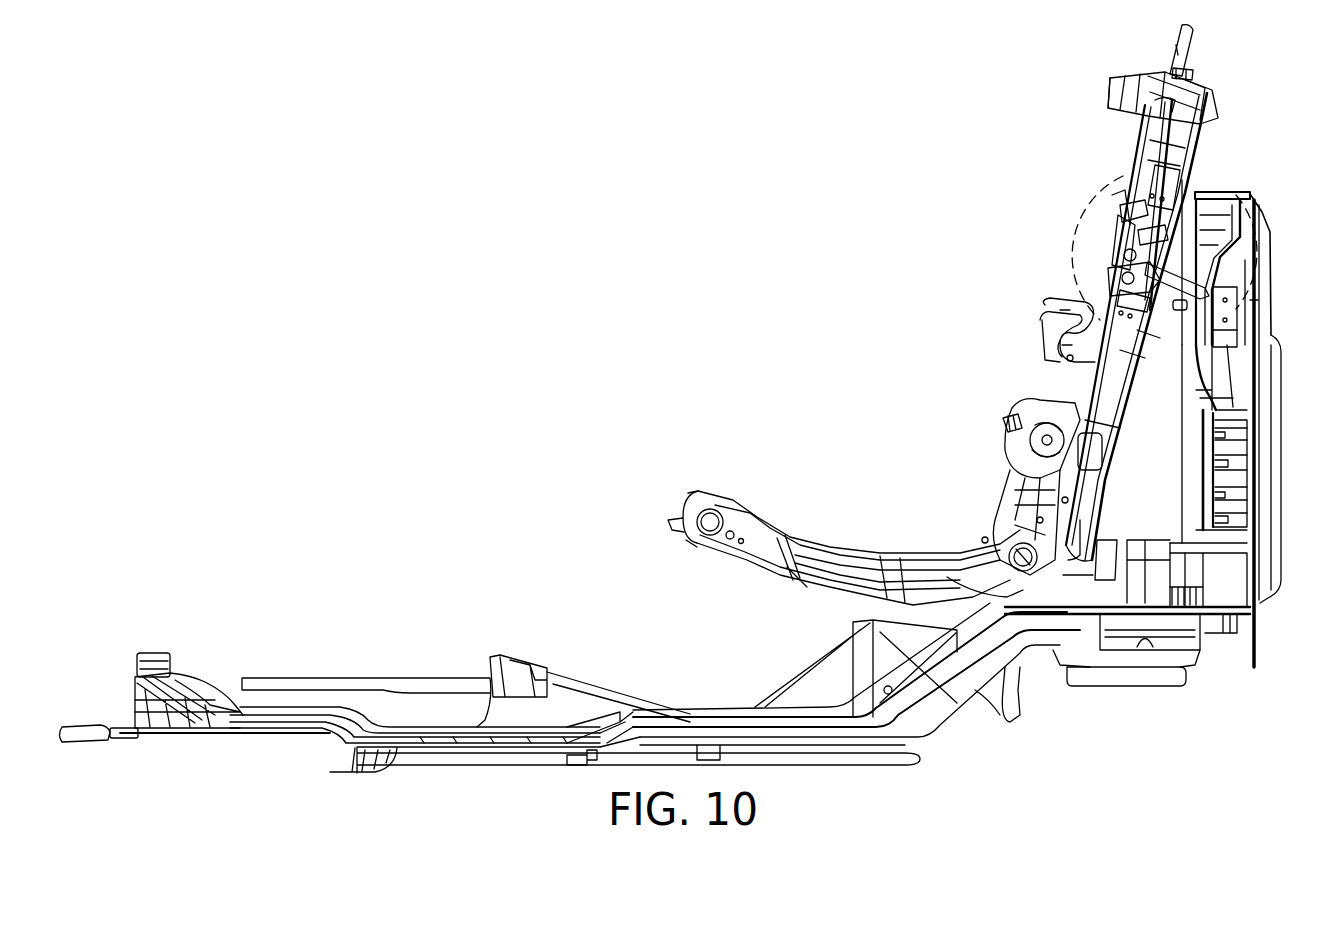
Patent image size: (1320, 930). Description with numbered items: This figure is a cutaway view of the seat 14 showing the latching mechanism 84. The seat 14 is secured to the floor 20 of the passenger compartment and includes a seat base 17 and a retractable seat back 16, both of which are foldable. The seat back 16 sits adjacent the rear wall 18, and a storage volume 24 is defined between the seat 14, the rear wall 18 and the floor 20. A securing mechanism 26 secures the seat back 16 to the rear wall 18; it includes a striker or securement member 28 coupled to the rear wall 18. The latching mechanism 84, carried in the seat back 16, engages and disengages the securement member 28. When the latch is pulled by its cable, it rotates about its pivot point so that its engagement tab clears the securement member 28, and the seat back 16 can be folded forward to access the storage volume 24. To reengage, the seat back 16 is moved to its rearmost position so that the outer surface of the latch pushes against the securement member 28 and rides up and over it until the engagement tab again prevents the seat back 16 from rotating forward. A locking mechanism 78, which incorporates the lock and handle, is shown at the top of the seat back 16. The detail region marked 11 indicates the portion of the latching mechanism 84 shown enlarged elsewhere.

The seat assembly detail region 11 is at (1100, 198).
The seat 14 is at (1005, 418).
The seat back 16 is at (1135, 162).
The seat base 17 is at (757, 512).
The rear wall 18 is at (1232, 470).
The floor 20 is at (710, 702).
The storage volume 24 is at (1137, 403).
The securing mechanism 26 is at (1218, 128).
The securement member 28 is at (1187, 194).
The locking mechanism 78 is at (1205, 84).
The latching mechanism 84 is at (1093, 237).